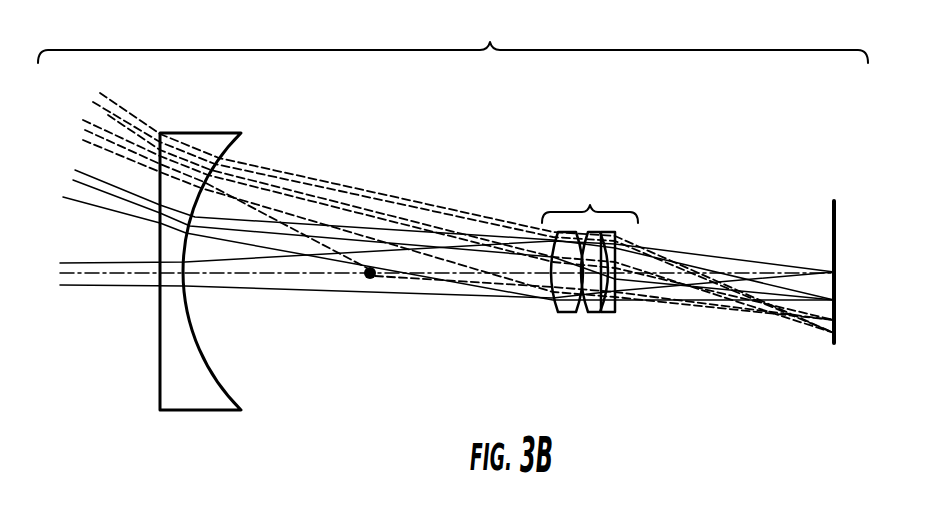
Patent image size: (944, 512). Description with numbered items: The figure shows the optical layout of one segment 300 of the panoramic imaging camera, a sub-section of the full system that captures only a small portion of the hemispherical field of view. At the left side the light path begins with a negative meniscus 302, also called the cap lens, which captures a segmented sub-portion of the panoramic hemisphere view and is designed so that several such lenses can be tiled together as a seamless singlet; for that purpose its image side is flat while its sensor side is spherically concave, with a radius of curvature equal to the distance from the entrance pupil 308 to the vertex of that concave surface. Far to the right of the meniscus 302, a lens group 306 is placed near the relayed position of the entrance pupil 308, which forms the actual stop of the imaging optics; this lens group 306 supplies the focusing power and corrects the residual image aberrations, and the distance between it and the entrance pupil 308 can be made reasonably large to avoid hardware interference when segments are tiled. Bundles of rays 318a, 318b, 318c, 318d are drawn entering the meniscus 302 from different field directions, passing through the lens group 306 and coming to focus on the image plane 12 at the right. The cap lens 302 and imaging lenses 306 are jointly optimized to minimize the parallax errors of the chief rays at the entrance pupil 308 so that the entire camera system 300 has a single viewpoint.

The segment of the camera system 300 is at (453, 35).
The negative meniscus 302 is at (198, 412).
The lens group 306 is at (590, 205).
The entrance pupil 308 is at (442, 298).
The image plane 12 is at (838, 237).
The on-axis ray bundle 318a is at (118, 287).
The off-axis ray bundle 318b is at (118, 212).
The off-axis ray bundle 318c is at (100, 148).
The off-axis ray bundle 318d is at (127, 110).